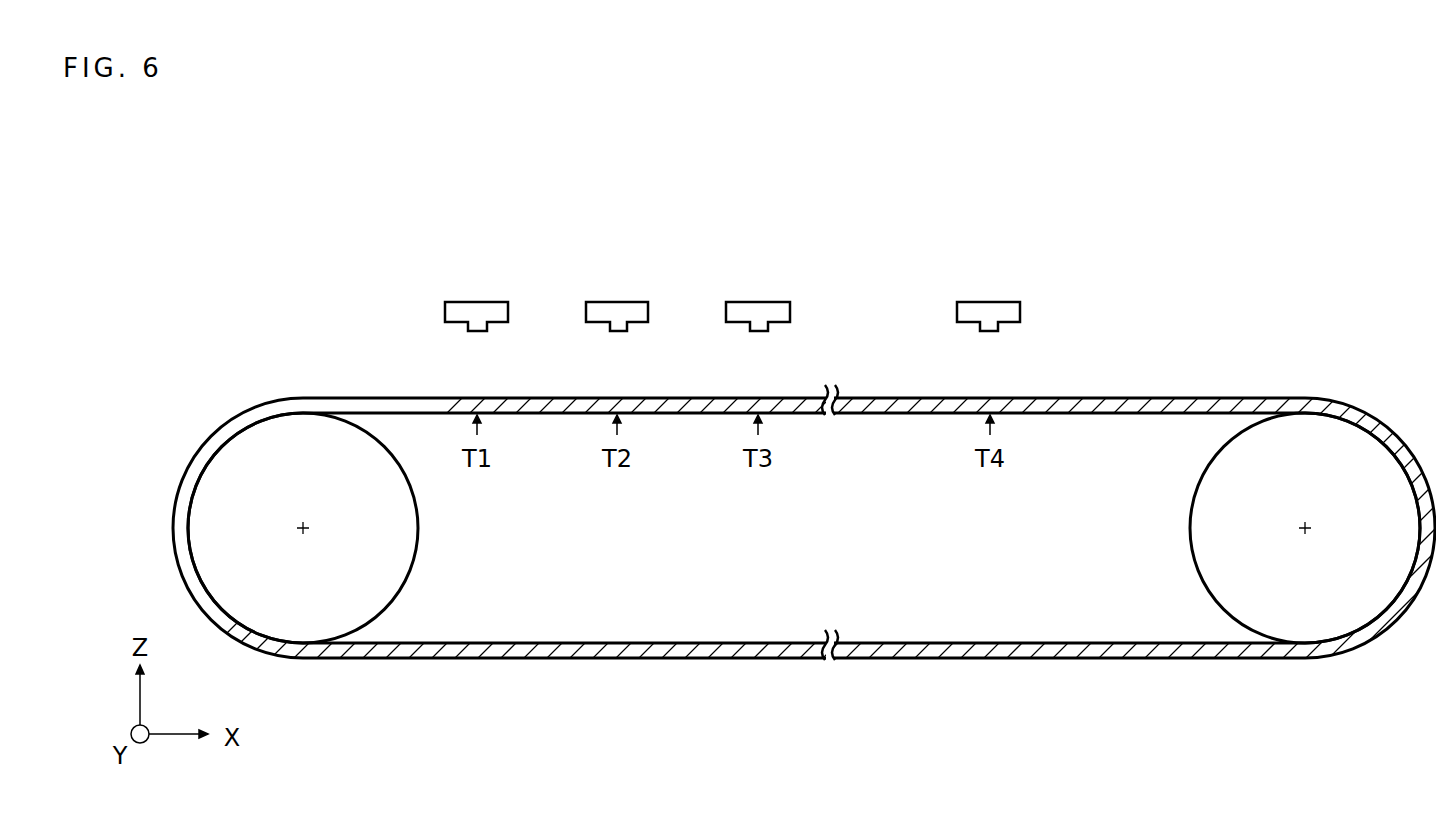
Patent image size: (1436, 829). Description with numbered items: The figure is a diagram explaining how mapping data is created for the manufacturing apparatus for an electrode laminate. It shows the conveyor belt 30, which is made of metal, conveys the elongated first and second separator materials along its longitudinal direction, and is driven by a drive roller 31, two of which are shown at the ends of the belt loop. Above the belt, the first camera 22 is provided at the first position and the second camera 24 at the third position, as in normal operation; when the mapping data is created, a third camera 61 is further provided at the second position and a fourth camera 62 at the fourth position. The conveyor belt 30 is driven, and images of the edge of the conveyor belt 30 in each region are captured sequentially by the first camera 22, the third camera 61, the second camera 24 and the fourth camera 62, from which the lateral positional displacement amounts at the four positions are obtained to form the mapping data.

The first camera 22 is at (478, 302).
The second camera 24 is at (758, 302).
The third camera 61 is at (620, 302).
The fourth camera 62 is at (992, 302).
The conveyor belt 30 is at (745, 658).
The drive roller 31 is at (400, 600).